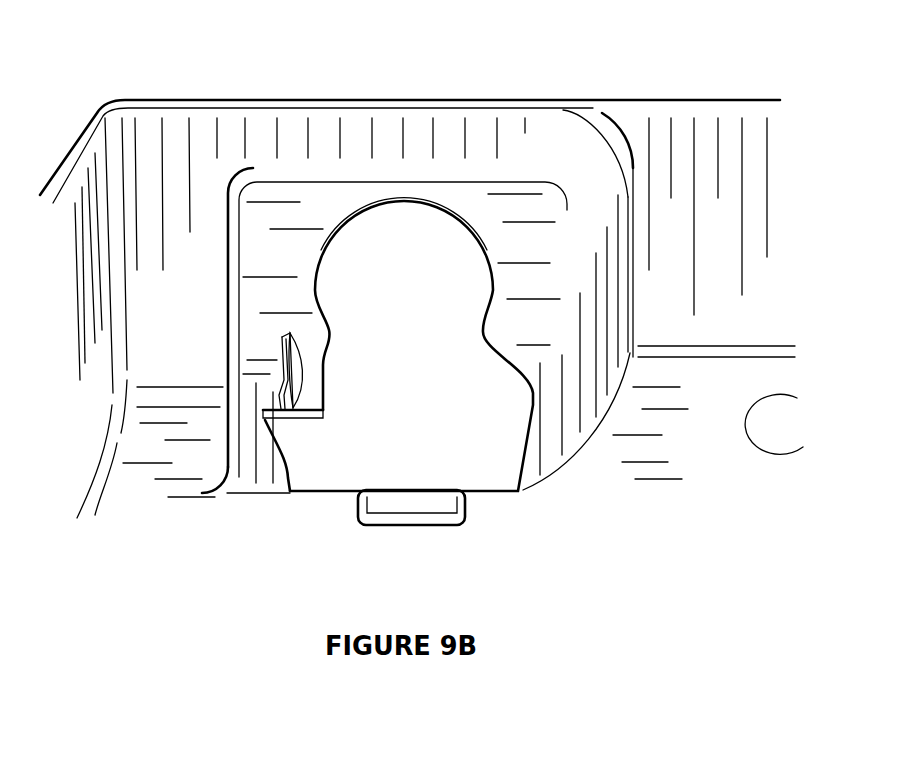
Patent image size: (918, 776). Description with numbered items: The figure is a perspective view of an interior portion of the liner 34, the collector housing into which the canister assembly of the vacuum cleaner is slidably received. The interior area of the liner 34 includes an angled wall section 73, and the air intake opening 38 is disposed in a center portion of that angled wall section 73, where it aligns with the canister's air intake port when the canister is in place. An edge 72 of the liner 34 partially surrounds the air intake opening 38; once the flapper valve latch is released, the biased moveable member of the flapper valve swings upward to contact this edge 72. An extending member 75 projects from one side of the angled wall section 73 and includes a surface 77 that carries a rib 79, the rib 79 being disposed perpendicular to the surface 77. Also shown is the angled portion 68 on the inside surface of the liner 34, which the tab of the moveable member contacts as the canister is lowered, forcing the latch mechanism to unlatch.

The liner 34 is at (562, 128).
The air intake opening 38 is at (448, 210).
The angled portion 68 is at (437, 503).
The edge 72 is at (407, 202).
The angled wall section 73 is at (307, 253).
The extending member 75 is at (303, 418).
The surface 77 is at (297, 398).
The rib 79 is at (283, 338).